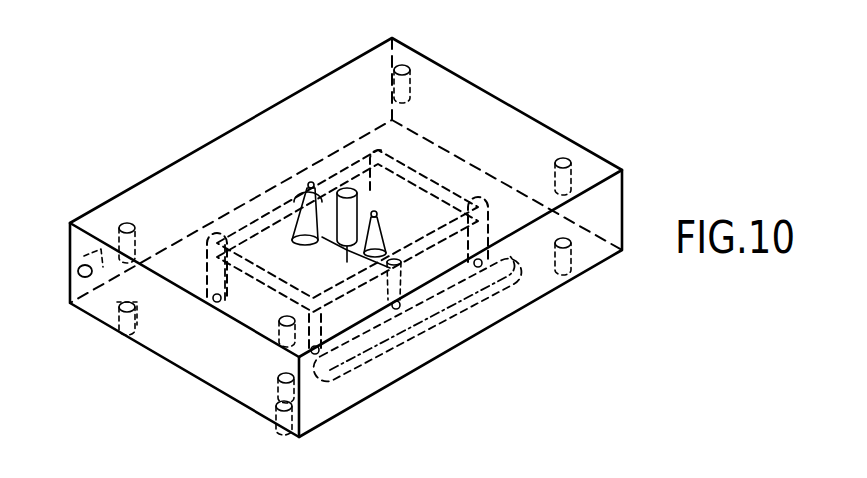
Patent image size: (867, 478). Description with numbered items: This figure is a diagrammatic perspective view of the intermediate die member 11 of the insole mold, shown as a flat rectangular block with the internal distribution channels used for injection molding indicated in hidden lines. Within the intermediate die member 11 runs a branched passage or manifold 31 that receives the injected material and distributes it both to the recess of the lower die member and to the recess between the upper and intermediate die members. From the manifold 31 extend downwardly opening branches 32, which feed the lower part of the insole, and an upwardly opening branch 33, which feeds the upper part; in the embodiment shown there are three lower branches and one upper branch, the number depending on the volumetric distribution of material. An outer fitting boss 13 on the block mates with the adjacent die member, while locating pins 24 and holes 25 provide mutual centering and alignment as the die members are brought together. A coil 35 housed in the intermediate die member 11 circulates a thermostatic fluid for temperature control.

The intermediate die member 11 is at (473, 110).
The fitting boss 13 is at (505, 293).
The locating pin 24 is at (122, 328).
The hole 25 is at (409, 70).
The branched passage 31 is at (286, 256).
The downwardly opening branch 32 is at (220, 302).
The upwardly opening branch 33 is at (305, 170).
The coil 35 is at (80, 266).